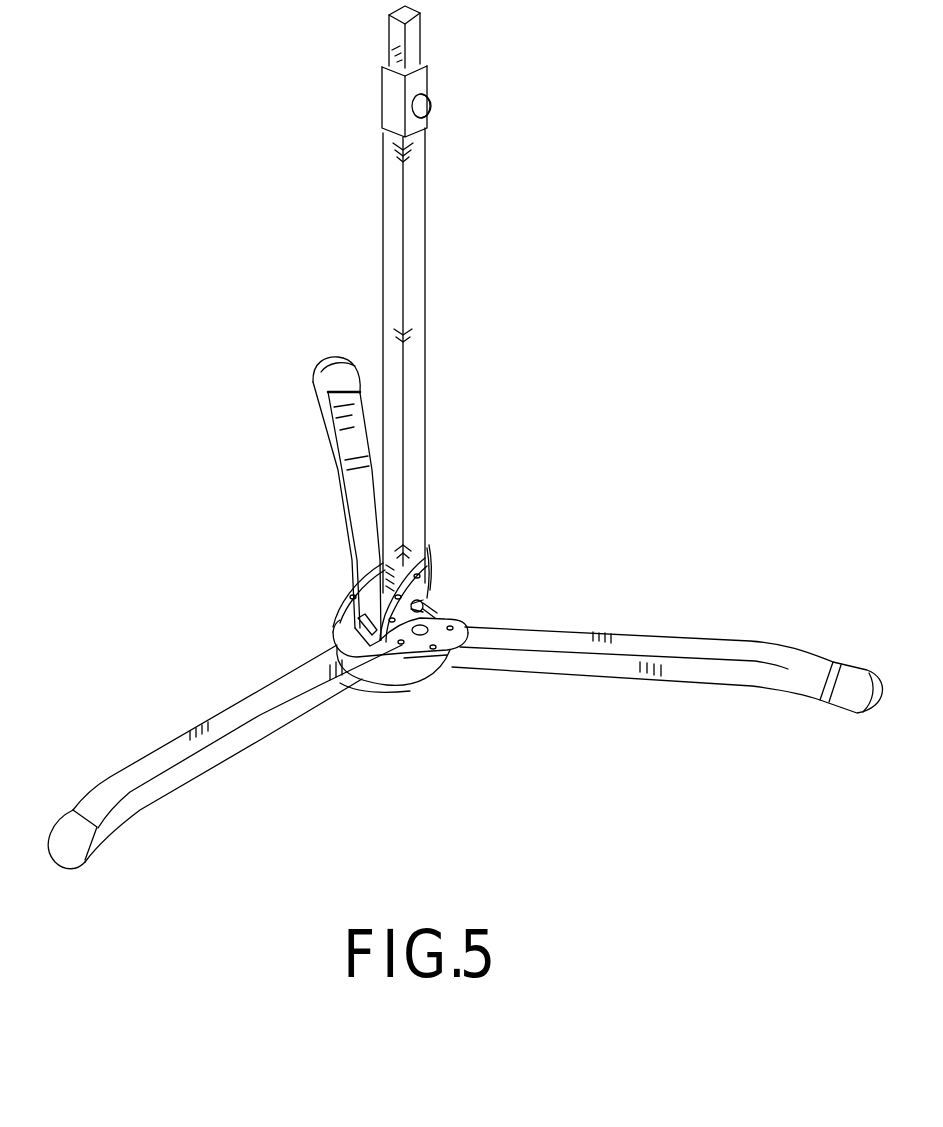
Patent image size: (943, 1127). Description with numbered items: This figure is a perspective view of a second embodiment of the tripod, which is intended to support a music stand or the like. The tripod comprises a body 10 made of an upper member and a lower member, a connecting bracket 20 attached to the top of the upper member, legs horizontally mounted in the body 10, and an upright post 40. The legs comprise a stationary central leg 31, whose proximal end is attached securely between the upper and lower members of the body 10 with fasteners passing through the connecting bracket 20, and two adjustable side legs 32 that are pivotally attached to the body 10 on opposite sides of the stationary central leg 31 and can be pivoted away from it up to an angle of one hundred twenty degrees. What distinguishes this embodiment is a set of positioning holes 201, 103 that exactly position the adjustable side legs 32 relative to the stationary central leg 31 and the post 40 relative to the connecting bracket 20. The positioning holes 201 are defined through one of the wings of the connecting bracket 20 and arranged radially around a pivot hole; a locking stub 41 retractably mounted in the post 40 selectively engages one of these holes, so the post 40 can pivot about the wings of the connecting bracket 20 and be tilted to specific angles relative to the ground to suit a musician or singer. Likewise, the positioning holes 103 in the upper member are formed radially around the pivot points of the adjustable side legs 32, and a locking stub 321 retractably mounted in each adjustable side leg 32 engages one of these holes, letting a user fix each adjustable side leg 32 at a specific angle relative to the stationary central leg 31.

The body 10 is at (450, 581).
The connecting bracket 20 is at (372, 590).
The positioning holes 201 is at (355, 627).
The positioning holes 103 is at (440, 650).
The stationary central leg 31 is at (200, 766).
The adjustable side leg 32 is at (349, 452).
The locking stub 321 is at (441, 620).
The post 40 is at (426, 287).
The locking stub 41 is at (428, 575).